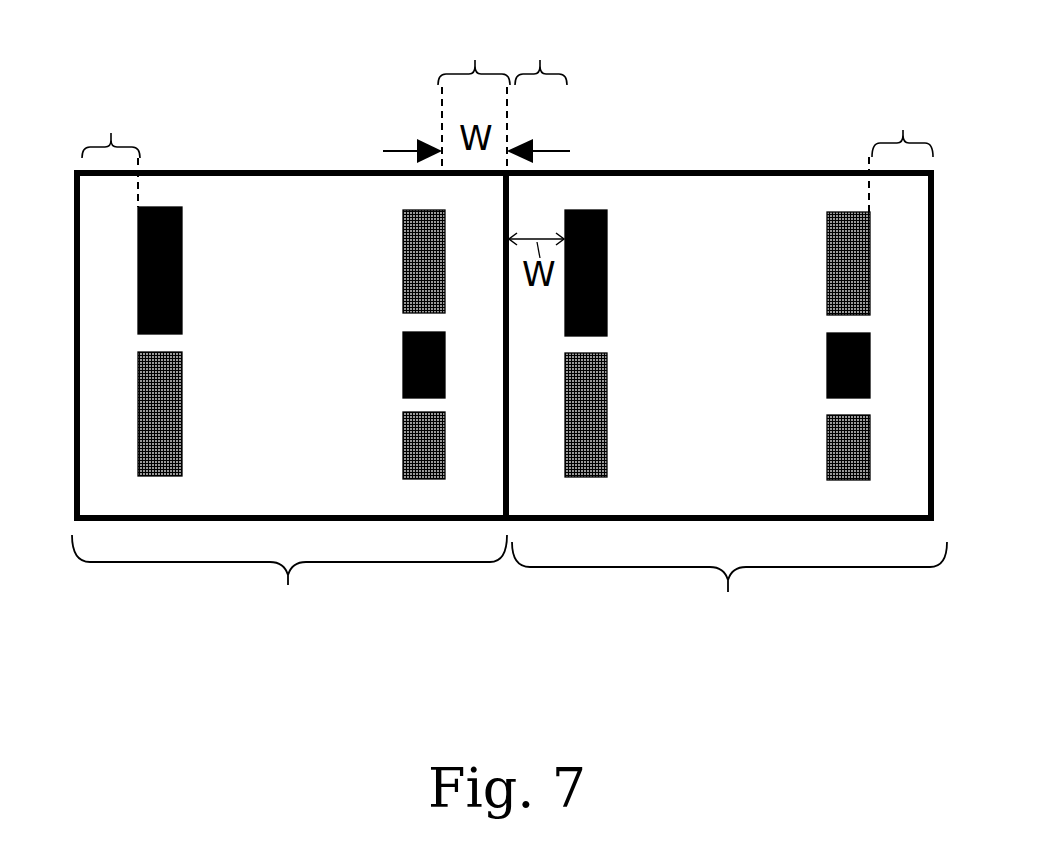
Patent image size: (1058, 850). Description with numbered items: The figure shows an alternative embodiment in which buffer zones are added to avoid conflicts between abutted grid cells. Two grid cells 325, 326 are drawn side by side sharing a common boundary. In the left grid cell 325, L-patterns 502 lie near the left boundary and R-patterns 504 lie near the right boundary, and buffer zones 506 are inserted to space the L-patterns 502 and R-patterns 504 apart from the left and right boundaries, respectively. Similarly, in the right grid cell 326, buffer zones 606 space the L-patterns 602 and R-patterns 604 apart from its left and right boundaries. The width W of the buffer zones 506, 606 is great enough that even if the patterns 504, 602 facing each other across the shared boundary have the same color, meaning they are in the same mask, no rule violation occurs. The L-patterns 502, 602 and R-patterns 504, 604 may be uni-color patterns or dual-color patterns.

The L-patterns 502 is at (176, 363).
The R-patterns 504 is at (407, 427).
The buffer zones 506 is at (112, 132).
The L-patterns 602 is at (596, 397).
The R-patterns 604 is at (832, 443).
The buffer zones 606 is at (542, 58).
The grid cell 325 is at (289, 592).
The grid cell 326 is at (729, 597).